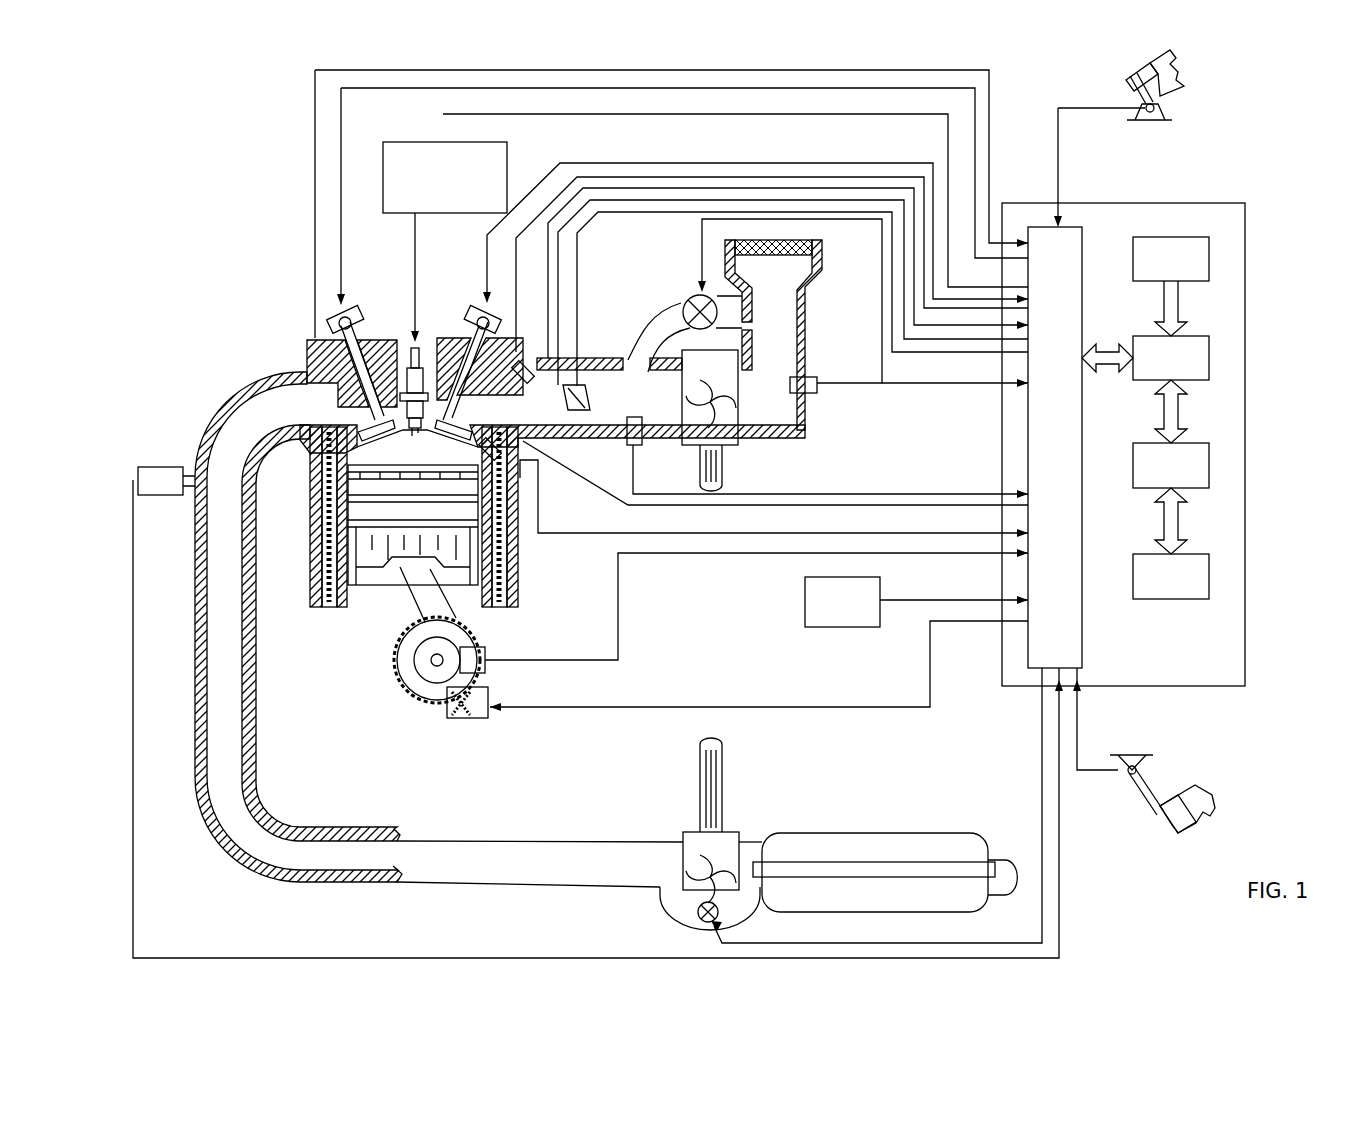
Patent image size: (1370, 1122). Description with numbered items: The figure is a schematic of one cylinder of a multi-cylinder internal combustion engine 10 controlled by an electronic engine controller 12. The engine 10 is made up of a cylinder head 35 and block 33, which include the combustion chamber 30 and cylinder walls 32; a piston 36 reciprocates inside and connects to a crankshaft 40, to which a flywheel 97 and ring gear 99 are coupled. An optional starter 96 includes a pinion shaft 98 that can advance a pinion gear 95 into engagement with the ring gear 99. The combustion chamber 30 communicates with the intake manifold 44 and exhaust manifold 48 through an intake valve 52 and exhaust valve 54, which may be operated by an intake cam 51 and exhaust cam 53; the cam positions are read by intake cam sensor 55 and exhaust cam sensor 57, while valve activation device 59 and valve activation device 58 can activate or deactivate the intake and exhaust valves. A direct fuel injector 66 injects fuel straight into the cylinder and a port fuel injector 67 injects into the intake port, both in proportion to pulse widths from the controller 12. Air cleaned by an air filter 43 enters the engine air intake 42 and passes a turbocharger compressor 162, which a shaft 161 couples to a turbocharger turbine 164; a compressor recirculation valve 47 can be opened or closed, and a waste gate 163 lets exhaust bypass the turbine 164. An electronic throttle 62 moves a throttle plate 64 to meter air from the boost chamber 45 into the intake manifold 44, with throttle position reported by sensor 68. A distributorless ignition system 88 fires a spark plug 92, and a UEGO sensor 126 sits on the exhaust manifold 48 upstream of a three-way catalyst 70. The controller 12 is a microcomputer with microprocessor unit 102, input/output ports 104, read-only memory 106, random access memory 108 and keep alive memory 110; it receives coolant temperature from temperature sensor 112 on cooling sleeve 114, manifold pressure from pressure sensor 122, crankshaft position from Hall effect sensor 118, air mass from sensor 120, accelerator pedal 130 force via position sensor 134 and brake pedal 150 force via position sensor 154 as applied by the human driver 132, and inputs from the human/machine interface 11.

The internal combustion engine 10 is at (243, 296).
The human/machine interface 11 is at (842, 602).
The electronic engine controller 12 is at (1245, 205).
The combustion chamber 30 is at (330, 545).
The cylinder walls 32 is at (352, 605).
The block 33 is at (306, 488).
The cylinder head 35 is at (302, 338).
The piston 36 is at (402, 567).
The crankshaft 40 is at (420, 690).
The engine air intake 42 is at (644, 268).
The air filter 43 is at (792, 255).
The intake manifold 44 is at (549, 415).
The boost chamber 45 is at (655, 415).
The compressor recirculation valve 47 is at (694, 298).
The exhaust manifold 48 is at (285, 420).
The intake cam 51 is at (476, 300).
The intake valve 52 is at (465, 397).
The exhaust cam 53 is at (346, 316).
The exhaust valve 54 is at (300, 388).
The intake cam sensor 55 is at (498, 330).
The exhaust cam sensor 57 is at (333, 320).
The valve activation device 58 is at (352, 325).
The valve activation device 59 is at (478, 325).
The electronic throttle 62 is at (583, 408).
The throttle plate 64 is at (627, 428).
The direct fuel injector 66 is at (538, 470).
The port fuel injector 67 is at (527, 360).
The throttle position sensor 68 is at (574, 370).
The three-way catalyst 70 is at (812, 833).
The distributorless ignition system 88 is at (507, 155).
The spark plug 92 is at (420, 345).
The pinion gear 95 is at (468, 712).
The starter 96 is at (482, 717).
The flywheel 97 is at (402, 660).
The pinion shaft 98 is at (446, 710).
The ring gear 99 is at (432, 700).
The microprocessor unit 102 is at (1209, 362).
The input/output ports 104 is at (1082, 245).
The read-only memory 106 is at (1209, 262).
The random access memory 108 is at (1209, 466).
The keep alive memory 110 is at (1209, 577).
The temperature sensor 112 is at (538, 482).
The cooling sleeve 114 is at (515, 553).
The Hall effect sensor 118 is at (486, 653).
The air mass sensor 120 is at (818, 380).
The pressure sensor 122 is at (627, 443).
The Universal Exhaust Gas Oxygen sensor 126 is at (135, 472).
The accelerator pedal 130 is at (1128, 82).
The human driver 132 is at (1184, 76).
The position sensor 134 is at (1170, 112).
The brake pedal 150 is at (1160, 820).
The position sensor 154 is at (1120, 768).
The shaft 161 is at (700, 470).
The turbocharger compressor 162 is at (725, 442).
The waste gate 163 is at (704, 925).
The turbocharger turbine 164 is at (683, 836).